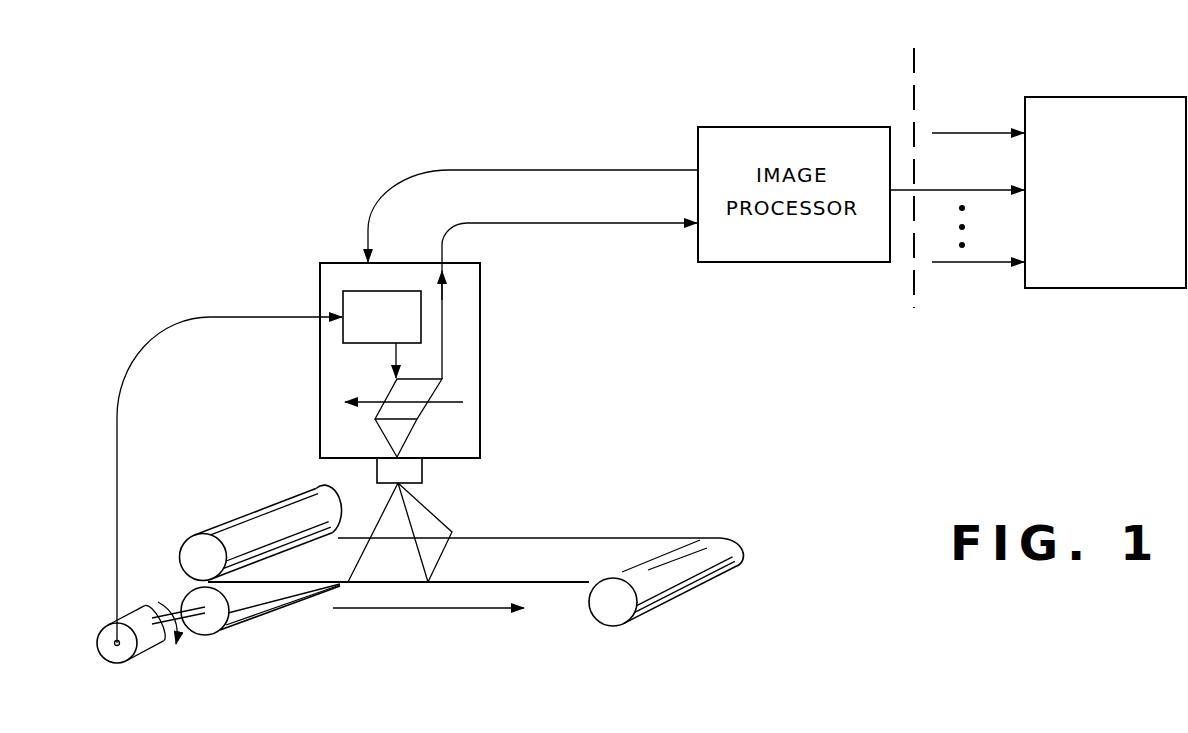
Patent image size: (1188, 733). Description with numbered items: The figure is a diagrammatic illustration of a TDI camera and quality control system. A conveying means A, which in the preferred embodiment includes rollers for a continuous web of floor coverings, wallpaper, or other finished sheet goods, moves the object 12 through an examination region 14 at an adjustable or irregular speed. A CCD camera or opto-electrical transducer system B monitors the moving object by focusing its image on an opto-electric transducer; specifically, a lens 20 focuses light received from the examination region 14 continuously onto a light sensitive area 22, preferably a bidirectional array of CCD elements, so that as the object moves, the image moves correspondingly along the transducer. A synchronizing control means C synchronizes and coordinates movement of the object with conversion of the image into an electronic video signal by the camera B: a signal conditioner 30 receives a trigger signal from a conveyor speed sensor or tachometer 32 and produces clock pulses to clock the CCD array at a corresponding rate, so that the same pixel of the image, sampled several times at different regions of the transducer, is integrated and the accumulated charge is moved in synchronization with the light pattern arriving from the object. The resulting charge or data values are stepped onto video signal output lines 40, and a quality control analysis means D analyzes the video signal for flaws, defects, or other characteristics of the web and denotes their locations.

The moving object 12 is at (582, 545).
The examination region 14 is at (444, 535).
The lens 20 is at (407, 470).
The light sensitive area 22 is at (436, 387).
The signal conditioner 30 is at (345, 291).
The conveyor speed sensor or tachometer 32 is at (122, 662).
The video signal output lines 40 is at (483, 224).
The conveying means A is at (284, 614).
The camera or opto-electrical transducer system B is at (521, 318).
The synchronizing control means C is at (299, 353).
The quality control analysis means D is at (1062, 92).